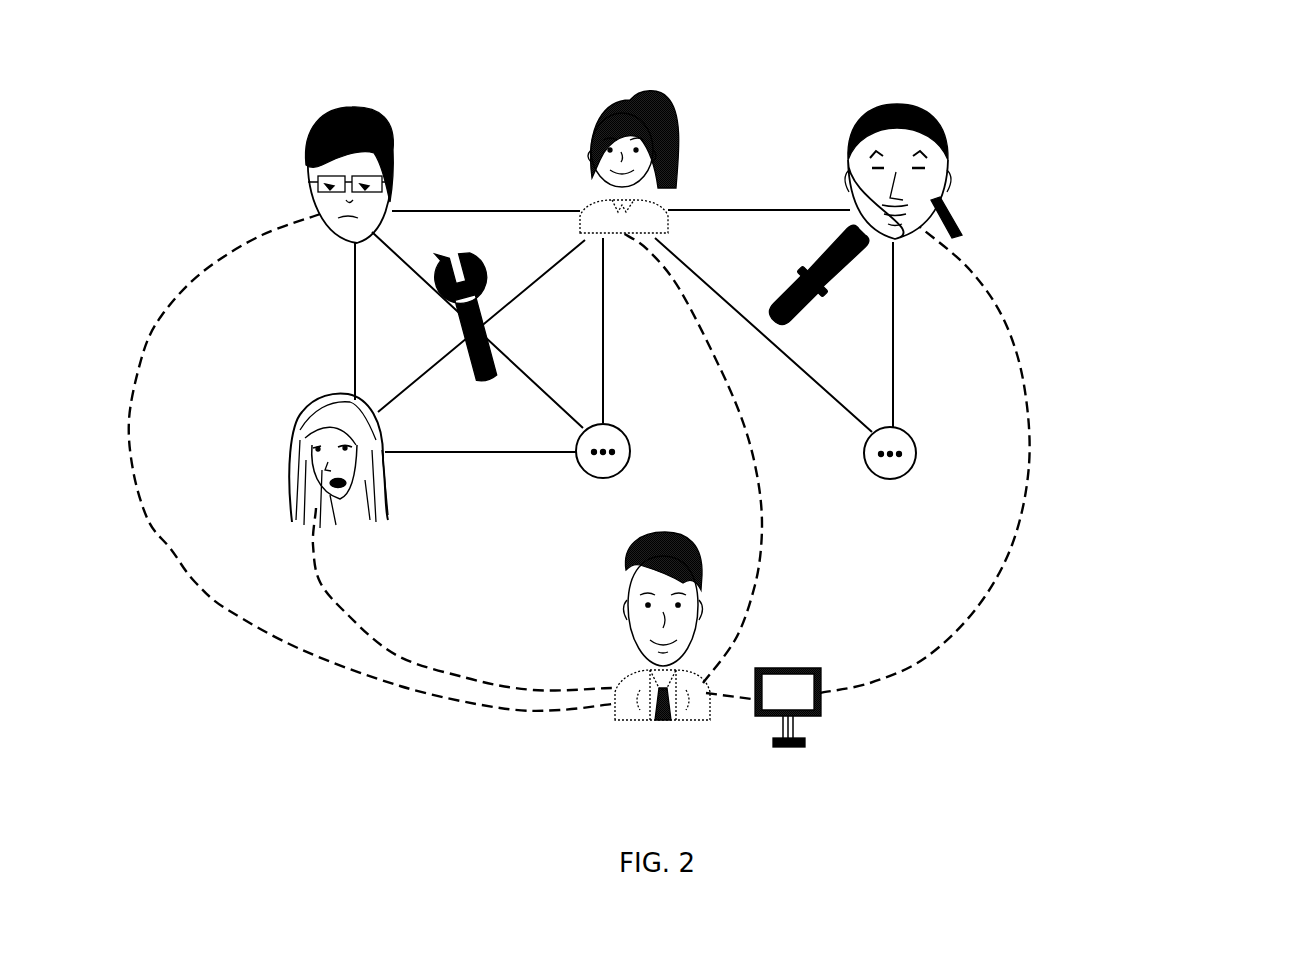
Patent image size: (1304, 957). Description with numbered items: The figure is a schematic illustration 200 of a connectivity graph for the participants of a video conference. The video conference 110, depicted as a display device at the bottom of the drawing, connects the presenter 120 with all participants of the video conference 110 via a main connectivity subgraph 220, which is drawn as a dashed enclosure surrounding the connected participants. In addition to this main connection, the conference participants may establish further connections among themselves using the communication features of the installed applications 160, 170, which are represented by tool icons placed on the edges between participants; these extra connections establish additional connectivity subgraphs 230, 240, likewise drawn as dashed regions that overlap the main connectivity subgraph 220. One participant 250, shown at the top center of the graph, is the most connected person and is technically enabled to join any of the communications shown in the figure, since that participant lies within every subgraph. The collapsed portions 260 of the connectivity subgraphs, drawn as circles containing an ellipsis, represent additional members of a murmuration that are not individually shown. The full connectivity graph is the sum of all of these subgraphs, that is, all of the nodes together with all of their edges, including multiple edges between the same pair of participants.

The schematic illustration 200 is at (1298, 113).
The video conference 110 is at (822, 702).
The presenter 120 is at (643, 722).
The installed application 160 is at (453, 290).
The installed application 170 is at (848, 267).
The main connectivity subgraph 220 is at (995, 580).
The additional connectivity subgraph 230 is at (893, 353).
The additional connectivity subgraph 240 is at (353, 315).
The participant 250 is at (673, 158).
The collapsed portions 260 is at (917, 453).